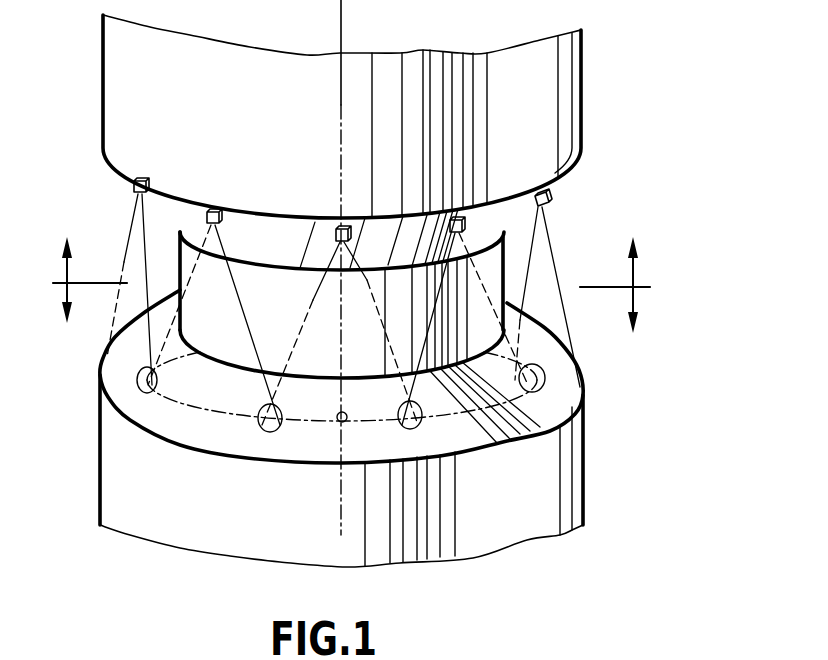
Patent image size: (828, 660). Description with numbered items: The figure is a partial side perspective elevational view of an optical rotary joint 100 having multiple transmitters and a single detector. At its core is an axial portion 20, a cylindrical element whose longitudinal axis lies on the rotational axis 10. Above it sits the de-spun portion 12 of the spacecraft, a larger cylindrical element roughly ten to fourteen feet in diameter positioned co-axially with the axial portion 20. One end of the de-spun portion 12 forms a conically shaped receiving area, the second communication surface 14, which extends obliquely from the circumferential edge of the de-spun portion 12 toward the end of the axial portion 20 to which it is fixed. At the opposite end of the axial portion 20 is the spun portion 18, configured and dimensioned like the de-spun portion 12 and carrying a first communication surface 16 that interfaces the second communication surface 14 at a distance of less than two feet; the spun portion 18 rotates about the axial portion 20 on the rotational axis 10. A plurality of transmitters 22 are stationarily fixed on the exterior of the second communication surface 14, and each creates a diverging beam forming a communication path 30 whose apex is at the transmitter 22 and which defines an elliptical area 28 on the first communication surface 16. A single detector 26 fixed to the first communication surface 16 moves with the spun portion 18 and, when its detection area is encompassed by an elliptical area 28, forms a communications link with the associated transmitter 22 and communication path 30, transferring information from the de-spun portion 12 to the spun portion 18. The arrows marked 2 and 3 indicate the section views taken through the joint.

The optical rotary joint 100 is at (615, 88).
The rotational axis 10 is at (345, 22).
The de-spun portion 12 is at (567, 57).
The second communication surface 14 is at (500, 226).
The first communication surface 16 is at (562, 397).
The spun portion 18 is at (553, 495).
The axial portion 20 is at (493, 275).
The transmitters 22 is at (147, 178).
The detector 26 is at (340, 423).
The elliptical area 28 is at (237, 428).
The communication path 30 is at (140, 235).
The section line 2- 2 is at (350, 268).
The section line 3- 3 is at (90, 323).